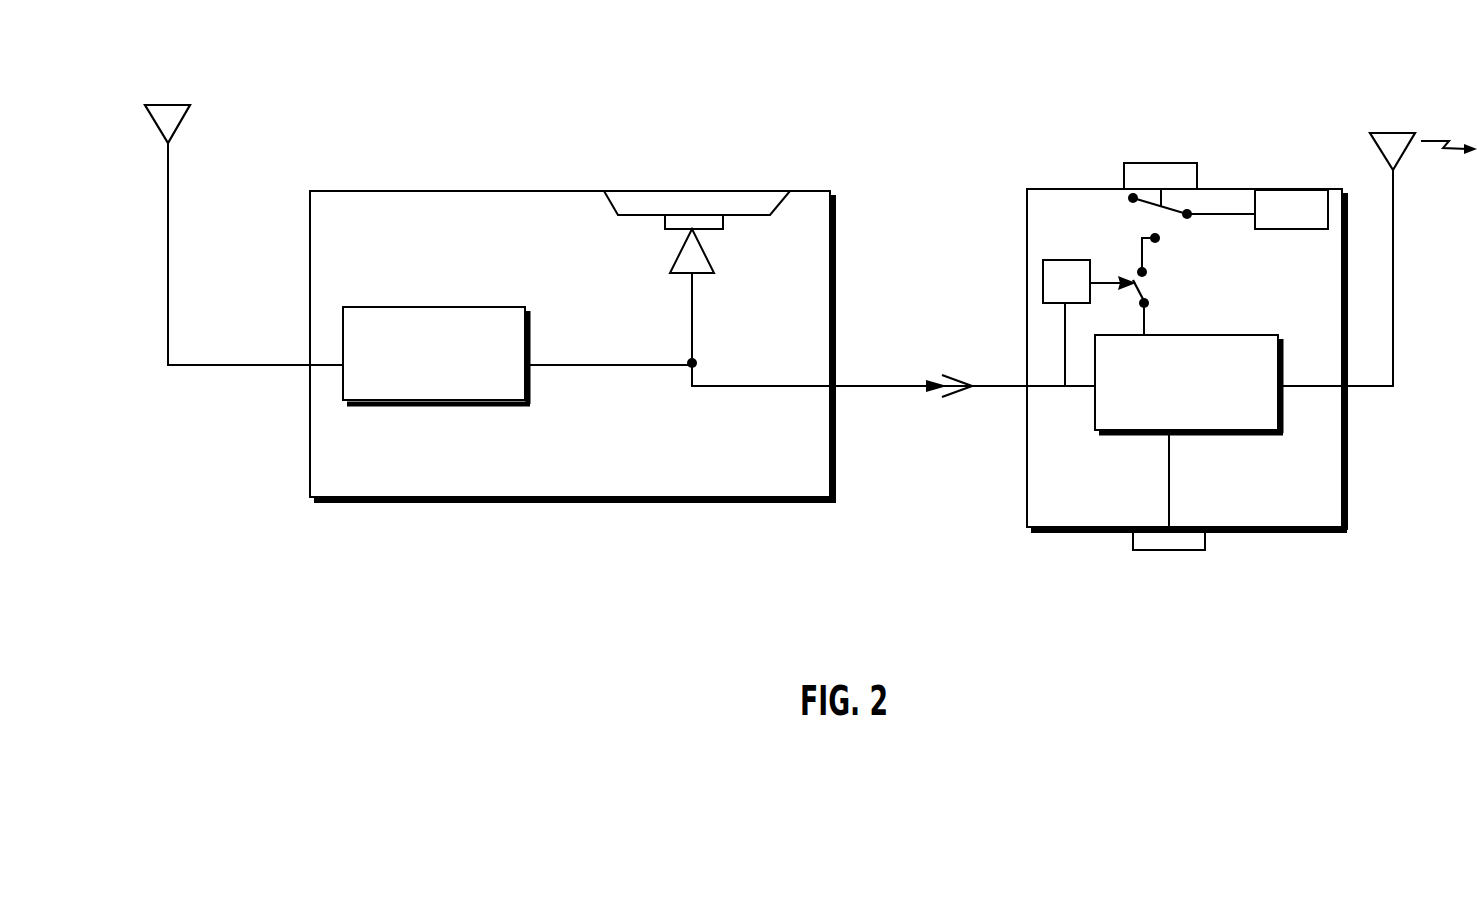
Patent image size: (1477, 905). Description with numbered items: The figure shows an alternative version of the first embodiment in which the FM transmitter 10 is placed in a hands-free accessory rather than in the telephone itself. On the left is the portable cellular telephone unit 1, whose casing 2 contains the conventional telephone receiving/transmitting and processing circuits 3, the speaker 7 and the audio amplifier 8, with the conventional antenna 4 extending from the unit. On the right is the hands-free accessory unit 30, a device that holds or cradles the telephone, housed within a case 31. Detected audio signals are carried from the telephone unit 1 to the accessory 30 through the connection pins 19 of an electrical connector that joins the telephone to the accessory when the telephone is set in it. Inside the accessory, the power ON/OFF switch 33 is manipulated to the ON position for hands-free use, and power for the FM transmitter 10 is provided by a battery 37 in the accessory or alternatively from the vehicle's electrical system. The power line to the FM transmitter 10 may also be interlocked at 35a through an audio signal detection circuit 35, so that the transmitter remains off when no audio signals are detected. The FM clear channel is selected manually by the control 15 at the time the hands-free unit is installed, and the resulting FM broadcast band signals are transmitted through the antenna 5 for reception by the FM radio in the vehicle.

The portable cellular telephone unit 1 is at (648, 92).
The casing 2 is at (358, 190).
The telephone receiving/transmitting and processing circuits 3 is at (428, 306).
The conventional antenna 4 is at (189, 105).
The antenna 5 is at (1413, 133).
The speaker 7 is at (770, 208).
The audio amplifier 8 is at (700, 262).
The FM transmitter 10 is at (1225, 338).
The frequency control element 15 is at (1205, 548).
The connection pins 19 is at (940, 398).
The hands-free accessory unit 30 is at (1172, 120).
The case 31 is at (1265, 190).
The power ON/OFF switch 33 is at (1138, 177).
The audio signal detection circuit 35 is at (1058, 263).
The interlock 35a is at (1148, 283).
The battery 37 is at (1302, 229).